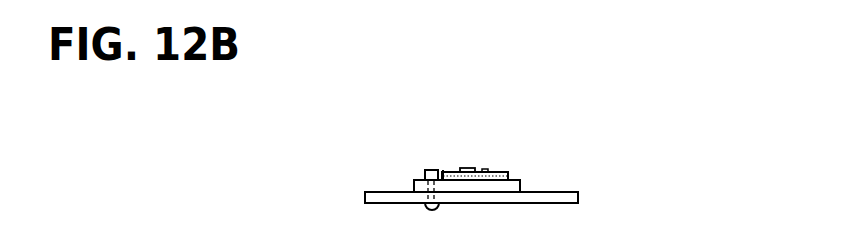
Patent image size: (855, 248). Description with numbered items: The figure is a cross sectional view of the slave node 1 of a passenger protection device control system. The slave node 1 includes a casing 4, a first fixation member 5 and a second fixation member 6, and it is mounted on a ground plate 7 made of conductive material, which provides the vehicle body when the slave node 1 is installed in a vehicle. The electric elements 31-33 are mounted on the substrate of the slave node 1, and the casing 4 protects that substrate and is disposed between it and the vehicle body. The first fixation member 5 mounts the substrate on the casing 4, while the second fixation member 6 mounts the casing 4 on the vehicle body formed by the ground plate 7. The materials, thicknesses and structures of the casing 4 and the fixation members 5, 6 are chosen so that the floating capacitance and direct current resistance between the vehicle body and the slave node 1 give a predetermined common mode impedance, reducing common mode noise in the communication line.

The slave node 1 is at (500, 172).
The casing 4 is at (412, 181).
The first fixation member 5 is at (447, 171).
The second fixation member 6 is at (428, 170).
The ground plate 7 is at (579, 196).
The electric elements 31-33 is at (473, 172).